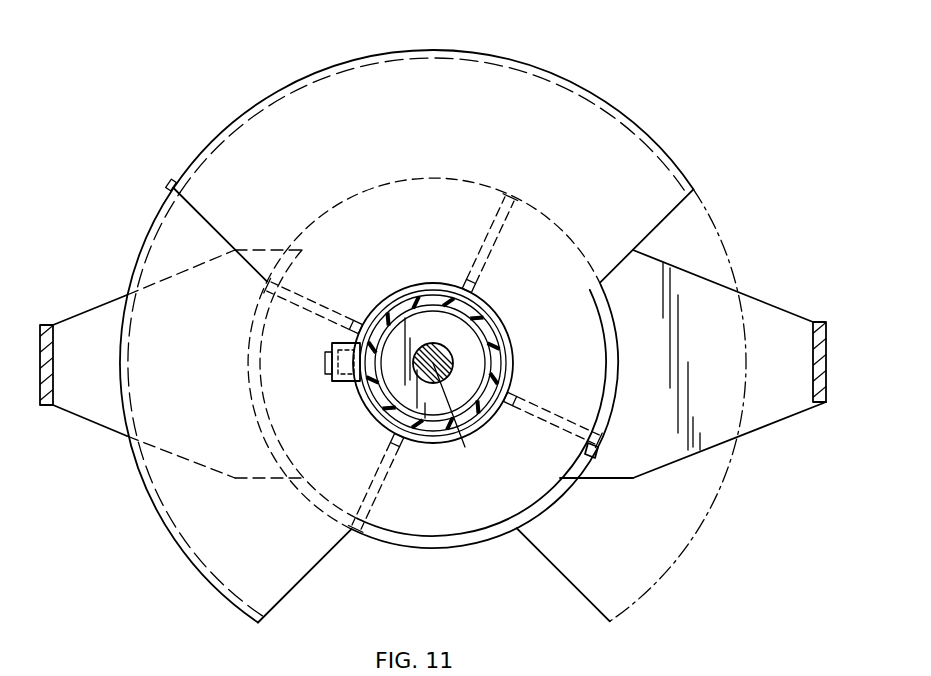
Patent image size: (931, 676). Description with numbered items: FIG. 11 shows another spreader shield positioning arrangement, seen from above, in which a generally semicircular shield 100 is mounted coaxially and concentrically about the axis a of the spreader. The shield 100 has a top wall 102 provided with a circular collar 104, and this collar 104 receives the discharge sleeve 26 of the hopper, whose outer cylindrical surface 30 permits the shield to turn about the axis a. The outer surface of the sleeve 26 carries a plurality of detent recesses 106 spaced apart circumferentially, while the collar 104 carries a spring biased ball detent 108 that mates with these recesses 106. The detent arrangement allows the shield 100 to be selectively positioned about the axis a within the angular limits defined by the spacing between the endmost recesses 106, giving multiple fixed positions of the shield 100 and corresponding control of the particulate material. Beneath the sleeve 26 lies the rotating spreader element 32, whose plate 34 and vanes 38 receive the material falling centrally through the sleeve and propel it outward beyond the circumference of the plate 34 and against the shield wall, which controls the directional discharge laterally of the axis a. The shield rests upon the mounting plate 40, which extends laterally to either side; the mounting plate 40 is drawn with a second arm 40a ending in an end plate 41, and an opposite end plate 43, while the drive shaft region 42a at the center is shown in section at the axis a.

The shield 100 is at (600, 88).
The top wall 102 is at (462, 95).
The circular collar 104 is at (486, 335).
The detent recesses 106 is at (430, 303).
The spring biased ball detent 108 is at (352, 379).
The discharge sleeve 26 is at (487, 303).
The outer cylindrical surface 30 is at (506, 367).
The spreader element 32 is at (493, 548).
The plate 34 is at (560, 507).
The vanes 38 is at (599, 450).
The mounting plate 40 is at (104, 440).
The arm 40a is at (726, 290).
The end plate 41 is at (818, 408).
The shaft 42a is at (453, 356).
The end plate 43 is at (45, 408).
The axis a is at (457, 417).